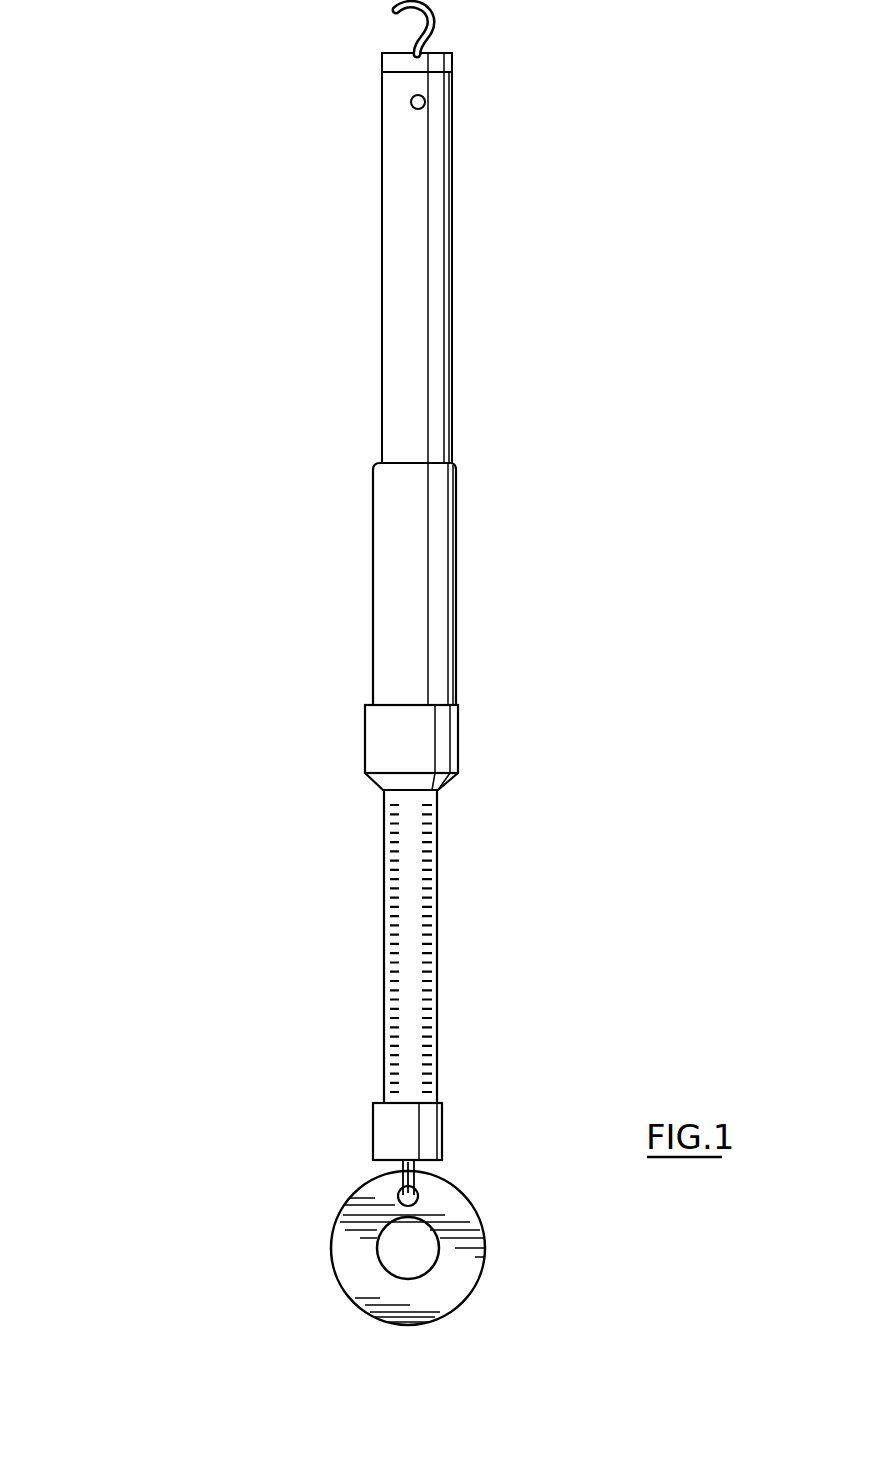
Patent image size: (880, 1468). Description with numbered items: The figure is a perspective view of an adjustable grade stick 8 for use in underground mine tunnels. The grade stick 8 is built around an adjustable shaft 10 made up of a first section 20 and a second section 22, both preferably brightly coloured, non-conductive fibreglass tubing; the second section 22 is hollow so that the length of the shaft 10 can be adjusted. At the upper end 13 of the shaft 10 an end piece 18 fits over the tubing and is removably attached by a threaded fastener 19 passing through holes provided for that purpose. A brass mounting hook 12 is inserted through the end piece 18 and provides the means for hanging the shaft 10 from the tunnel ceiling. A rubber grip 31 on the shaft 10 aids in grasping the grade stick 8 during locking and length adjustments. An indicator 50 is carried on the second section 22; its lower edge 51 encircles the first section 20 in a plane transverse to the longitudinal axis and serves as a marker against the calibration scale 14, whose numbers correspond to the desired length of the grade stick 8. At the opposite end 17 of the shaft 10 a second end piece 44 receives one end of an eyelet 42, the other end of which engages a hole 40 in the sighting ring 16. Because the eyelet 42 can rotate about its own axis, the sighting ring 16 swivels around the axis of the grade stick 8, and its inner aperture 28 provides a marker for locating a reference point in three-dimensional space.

The adjustable grade stick 8 is at (752, 840).
The adjustable shaft 10 is at (160, 591).
The mounting hook 12 is at (438, 18).
The end of the shaft 13 is at (335, 93).
The calibration scale 14 is at (437, 950).
The sighting ring 16 is at (485, 1248).
The end of the shaft 17 is at (355, 1160).
The end piece 18 is at (453, 64).
The threaded fastener 19 is at (426, 102).
The first section 20 is at (438, 1003).
The second section 22 is at (530, 312).
The inner aperture 28 is at (422, 1262).
The rubber grip 31 is at (373, 598).
The hole 40 is at (416, 1200).
The eyelet 42 is at (400, 1178).
The second end piece 44 is at (443, 1137).
The indicator 50 is at (365, 738).
The lower edge 51 is at (380, 788).